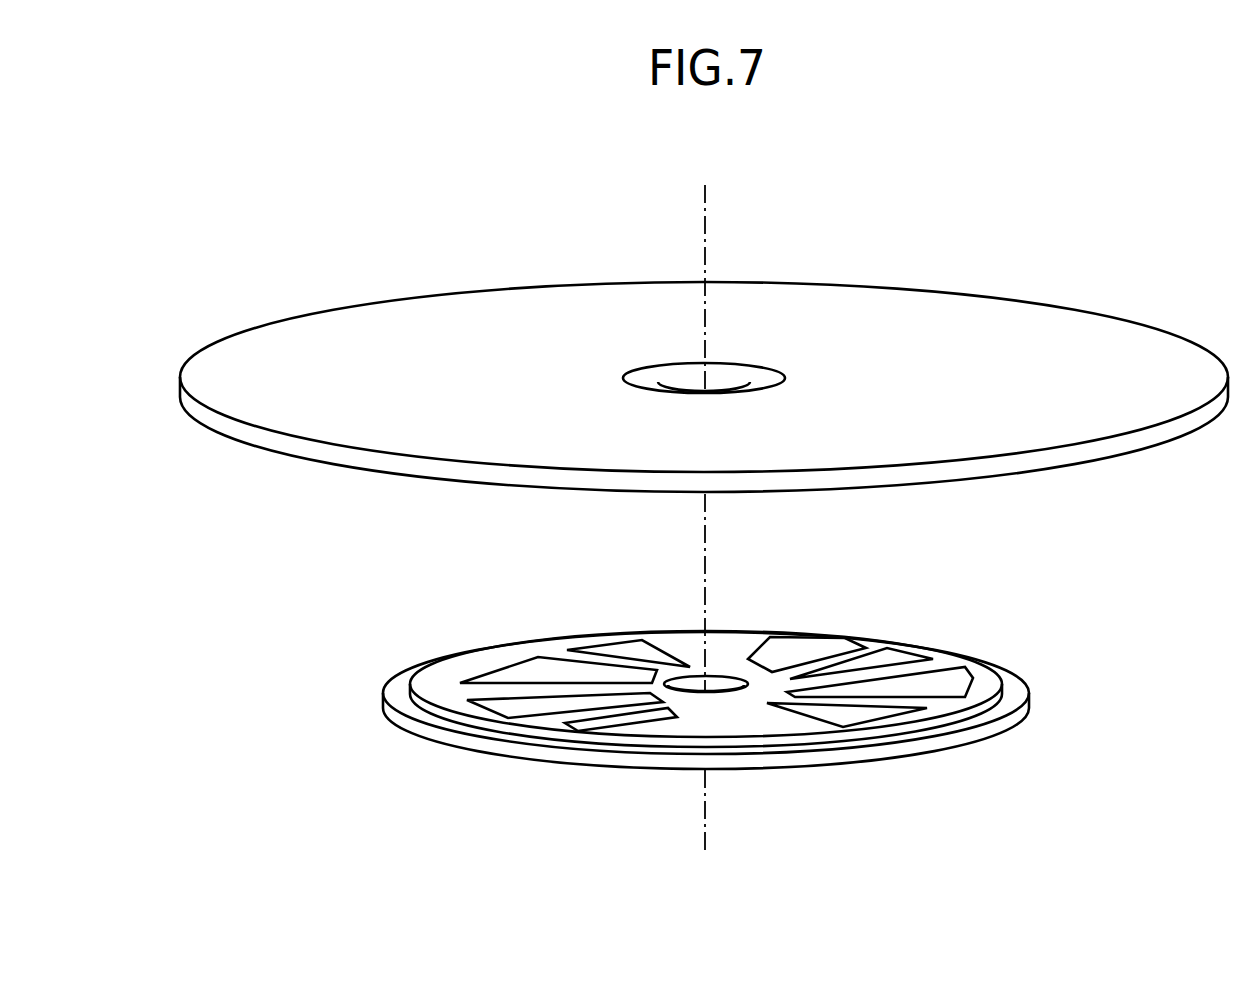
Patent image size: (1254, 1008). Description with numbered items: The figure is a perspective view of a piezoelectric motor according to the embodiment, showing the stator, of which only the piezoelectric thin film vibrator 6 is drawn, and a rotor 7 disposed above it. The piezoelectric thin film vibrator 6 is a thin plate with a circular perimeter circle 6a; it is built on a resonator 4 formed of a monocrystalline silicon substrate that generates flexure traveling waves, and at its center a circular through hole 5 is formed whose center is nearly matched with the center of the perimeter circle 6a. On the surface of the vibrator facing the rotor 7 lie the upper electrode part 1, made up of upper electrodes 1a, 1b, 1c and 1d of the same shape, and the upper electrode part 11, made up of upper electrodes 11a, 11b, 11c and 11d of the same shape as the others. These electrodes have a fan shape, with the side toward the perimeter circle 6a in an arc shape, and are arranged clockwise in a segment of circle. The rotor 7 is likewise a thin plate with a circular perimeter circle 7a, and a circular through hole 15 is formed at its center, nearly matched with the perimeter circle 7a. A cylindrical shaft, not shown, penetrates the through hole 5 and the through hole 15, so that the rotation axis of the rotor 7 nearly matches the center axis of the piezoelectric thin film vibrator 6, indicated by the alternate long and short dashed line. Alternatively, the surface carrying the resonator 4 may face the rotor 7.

The upper electrode part 1 is at (965, 652).
The upper electrode 1a is at (797, 650).
The upper electrode 1b is at (893, 662).
The upper electrode 1c is at (940, 683).
The upper electrode 1d is at (856, 714).
The resonator 4 is at (820, 760).
The through hole 5 is at (716, 682).
The piezoelectric thin film vibrator 6 is at (702, 704).
The perimeter circle 6a is at (680, 630).
The rotor 7 is at (704, 343).
The perimeter circle 7a is at (488, 290).
The upper electrode part 11 is at (456, 668).
The upper electrode 11a is at (605, 726).
The upper electrode 11b is at (510, 708).
The upper electrode 11c is at (523, 670).
The upper electrode 11d is at (627, 648).
The through hole 15 is at (720, 386).